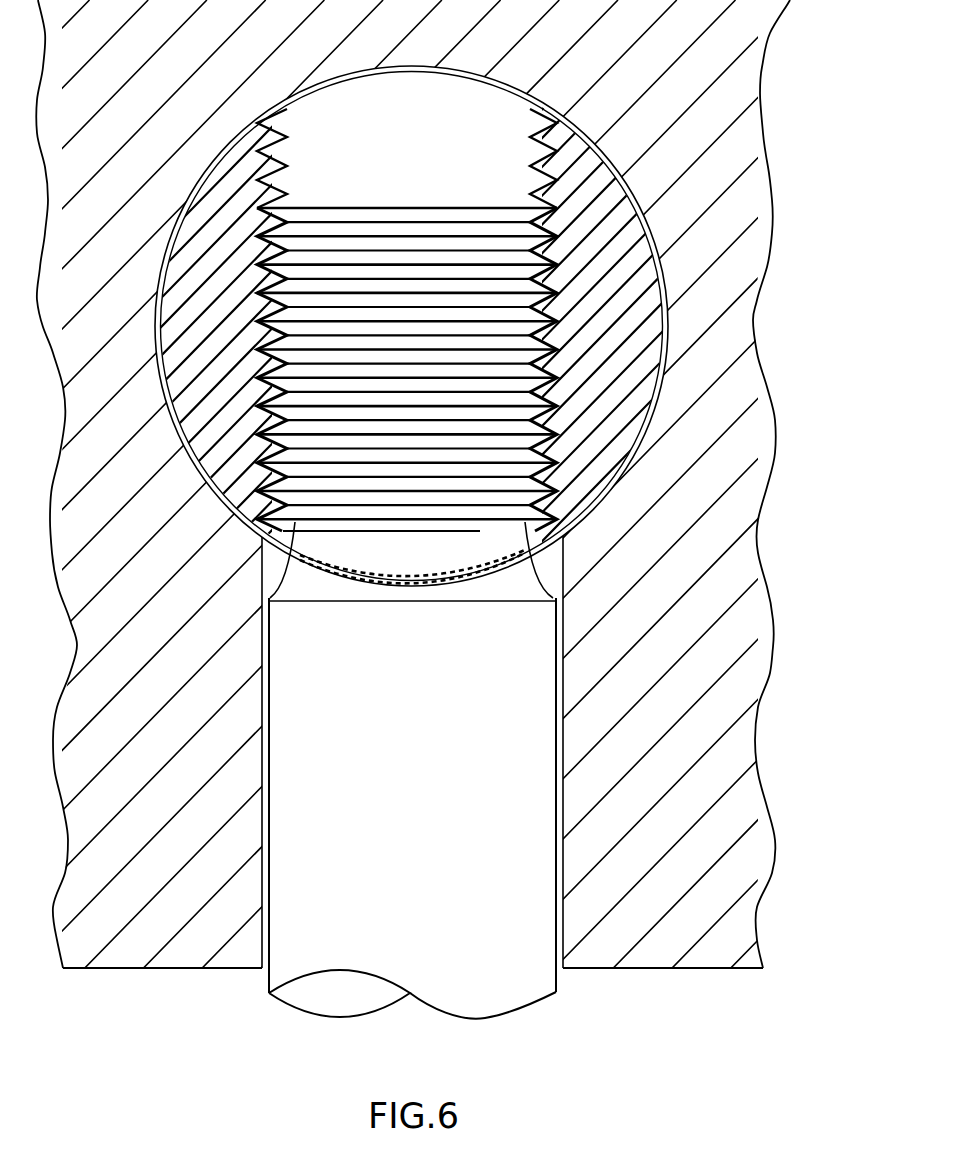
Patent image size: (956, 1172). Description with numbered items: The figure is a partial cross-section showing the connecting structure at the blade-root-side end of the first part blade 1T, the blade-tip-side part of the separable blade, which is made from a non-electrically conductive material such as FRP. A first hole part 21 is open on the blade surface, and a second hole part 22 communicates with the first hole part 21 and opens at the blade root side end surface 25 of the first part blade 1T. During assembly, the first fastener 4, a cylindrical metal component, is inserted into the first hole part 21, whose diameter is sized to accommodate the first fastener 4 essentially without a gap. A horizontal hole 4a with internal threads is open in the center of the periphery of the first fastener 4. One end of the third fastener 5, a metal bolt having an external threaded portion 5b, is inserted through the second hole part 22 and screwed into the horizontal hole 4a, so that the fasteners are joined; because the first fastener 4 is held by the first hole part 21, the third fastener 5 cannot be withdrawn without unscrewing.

The first part blade 1T is at (652, 952).
The first hole part 21 is at (309, 97).
The second hole part 22 is at (264, 578).
The blade root side end surface 25 is at (141, 970).
The first fastener 4 is at (261, 375).
The horizontal hole 4a is at (537, 173).
The third fastener 5 is at (490, 998).
The external threaded portion 5b is at (385, 218).